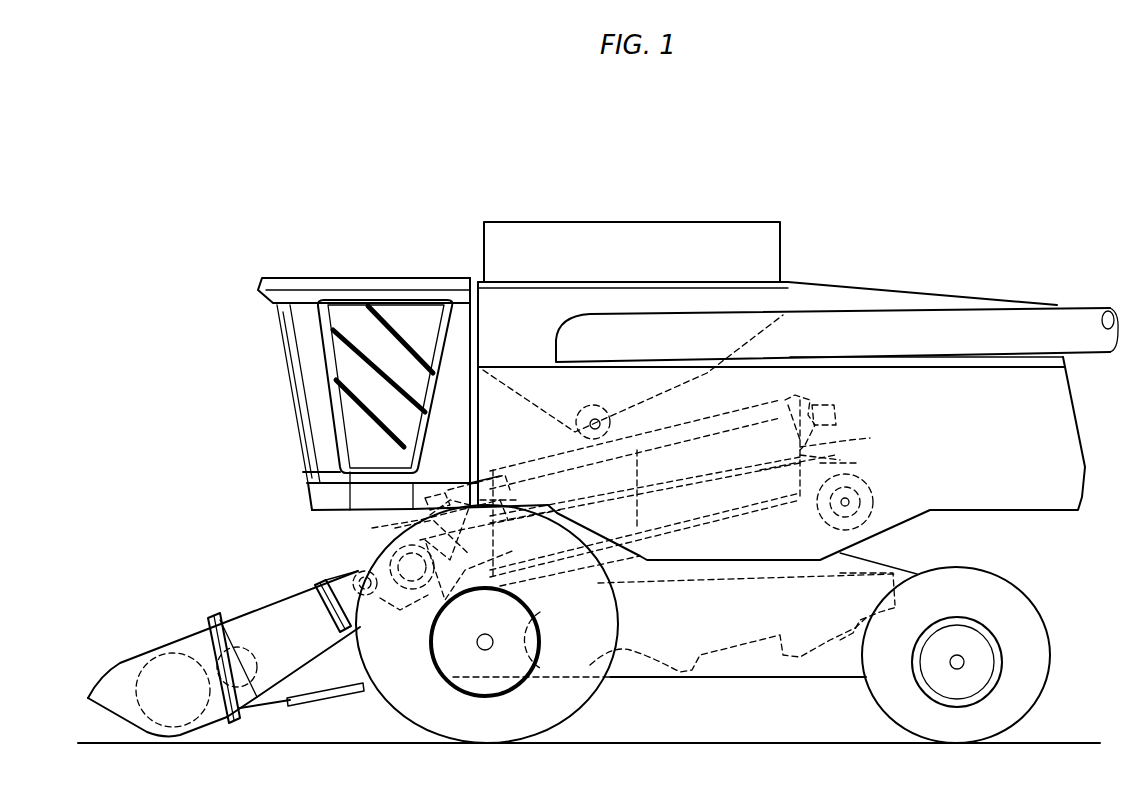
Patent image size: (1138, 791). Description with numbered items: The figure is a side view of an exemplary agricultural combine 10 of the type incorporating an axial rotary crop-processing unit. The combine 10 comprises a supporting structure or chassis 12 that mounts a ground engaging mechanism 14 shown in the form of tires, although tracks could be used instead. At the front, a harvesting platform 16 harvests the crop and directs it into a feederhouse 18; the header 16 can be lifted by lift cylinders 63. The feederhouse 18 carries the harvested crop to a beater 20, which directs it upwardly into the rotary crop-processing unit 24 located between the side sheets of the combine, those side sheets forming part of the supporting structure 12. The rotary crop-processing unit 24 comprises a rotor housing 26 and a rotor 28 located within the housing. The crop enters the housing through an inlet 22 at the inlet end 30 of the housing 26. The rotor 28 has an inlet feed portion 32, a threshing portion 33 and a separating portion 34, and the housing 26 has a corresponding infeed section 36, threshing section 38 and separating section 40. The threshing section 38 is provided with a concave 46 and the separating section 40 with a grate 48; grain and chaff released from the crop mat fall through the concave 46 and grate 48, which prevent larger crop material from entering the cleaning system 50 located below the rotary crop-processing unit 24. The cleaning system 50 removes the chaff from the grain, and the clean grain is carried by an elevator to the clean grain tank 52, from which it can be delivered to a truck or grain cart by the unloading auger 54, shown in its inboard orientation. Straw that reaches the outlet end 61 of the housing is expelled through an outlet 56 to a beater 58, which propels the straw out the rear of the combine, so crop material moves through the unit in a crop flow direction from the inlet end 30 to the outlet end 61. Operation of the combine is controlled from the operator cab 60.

The agricultural combine 10 is at (885, 232).
The supporting structure or chassis 12 is at (640, 581).
The ground engaging mechanism 14 is at (608, 705).
The harvesting platform 16 is at (113, 661).
The feederhouse 18 is at (292, 590).
The beater 20 is at (384, 558).
The inlet 22 is at (407, 528).
The rotary crop-processing unit 24 is at (683, 415).
The rotor housing 26 is at (765, 405).
The rotor 28 is at (797, 395).
The inlet end 30 is at (371, 500).
The inlet feed portion 32 is at (442, 484).
The threshing portion 33 is at (490, 475).
The separating portion 34 is at (640, 430).
The infeed section 36 is at (431, 483).
The threshing section 38 is at (548, 450).
The separating section 40 is at (640, 432).
The concave 46 is at (565, 555).
The grate 48 is at (760, 520).
The cleaning system 50 is at (748, 578).
The clean grain tank 52 is at (538, 337).
The unloading auger 54 is at (929, 347).
The outlet 56 is at (828, 466).
The beater 58 is at (873, 490).
The operator cab 60 is at (404, 365).
The outlet end 61 is at (832, 455).
The lift cylinders 63 is at (293, 702).